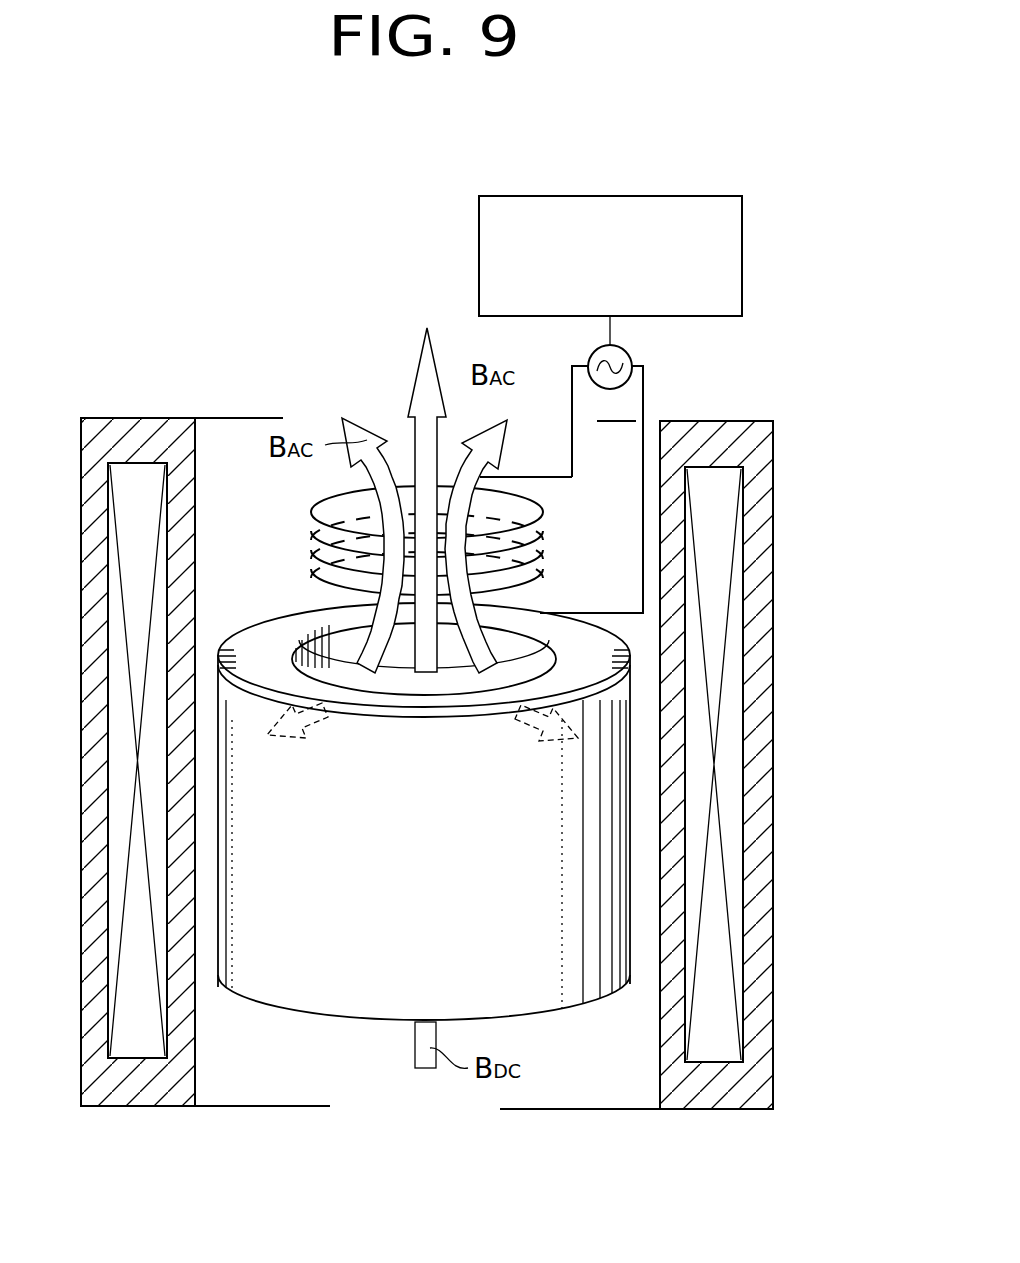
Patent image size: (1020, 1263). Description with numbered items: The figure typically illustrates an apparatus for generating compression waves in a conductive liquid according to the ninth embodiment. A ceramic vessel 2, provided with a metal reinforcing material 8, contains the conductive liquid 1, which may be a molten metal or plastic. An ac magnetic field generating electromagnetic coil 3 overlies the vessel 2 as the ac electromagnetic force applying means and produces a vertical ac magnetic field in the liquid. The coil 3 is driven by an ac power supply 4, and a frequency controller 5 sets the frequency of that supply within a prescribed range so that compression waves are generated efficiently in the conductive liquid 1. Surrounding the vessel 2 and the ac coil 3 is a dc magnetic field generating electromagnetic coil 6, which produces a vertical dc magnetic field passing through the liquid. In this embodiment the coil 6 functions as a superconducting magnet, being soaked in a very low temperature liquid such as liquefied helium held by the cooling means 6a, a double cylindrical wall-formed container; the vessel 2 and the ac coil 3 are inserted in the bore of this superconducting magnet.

The conductive liquid 1 is at (343, 668).
The ceramic vessel 2 is at (282, 636).
The ac magnetic field generating electromagnetic coil 3 is at (318, 527).
The ac power supply 4 is at (622, 360).
The frequency controller 5 is at (490, 218).
The dc magnetic field generating electromagnetic coil 6 is at (730, 478).
The cooling means 6a is at (184, 418).
The metal reinforcing material 8 is at (238, 636).